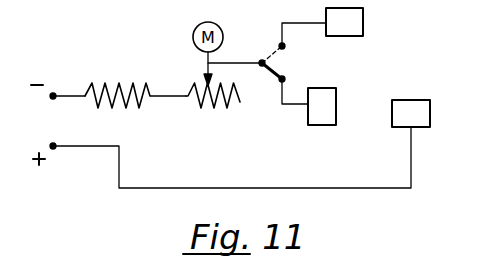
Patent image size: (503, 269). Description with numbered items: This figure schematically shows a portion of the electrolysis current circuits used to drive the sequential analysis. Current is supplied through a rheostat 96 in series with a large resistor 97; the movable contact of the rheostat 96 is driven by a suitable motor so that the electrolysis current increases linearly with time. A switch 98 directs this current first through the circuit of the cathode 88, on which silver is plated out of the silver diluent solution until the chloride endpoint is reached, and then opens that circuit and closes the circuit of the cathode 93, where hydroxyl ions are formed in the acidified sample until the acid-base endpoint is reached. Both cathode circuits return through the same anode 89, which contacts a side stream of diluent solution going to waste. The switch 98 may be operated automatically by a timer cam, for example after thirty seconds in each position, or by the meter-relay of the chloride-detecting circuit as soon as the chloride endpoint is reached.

The large resistor 97 is at (110, 82).
The rheostat 96 is at (210, 110).
The switch 98 is at (264, 56).
The cathode 93 is at (357, 31).
The cathode 88 is at (331, 107).
The anode 89 is at (424, 107).